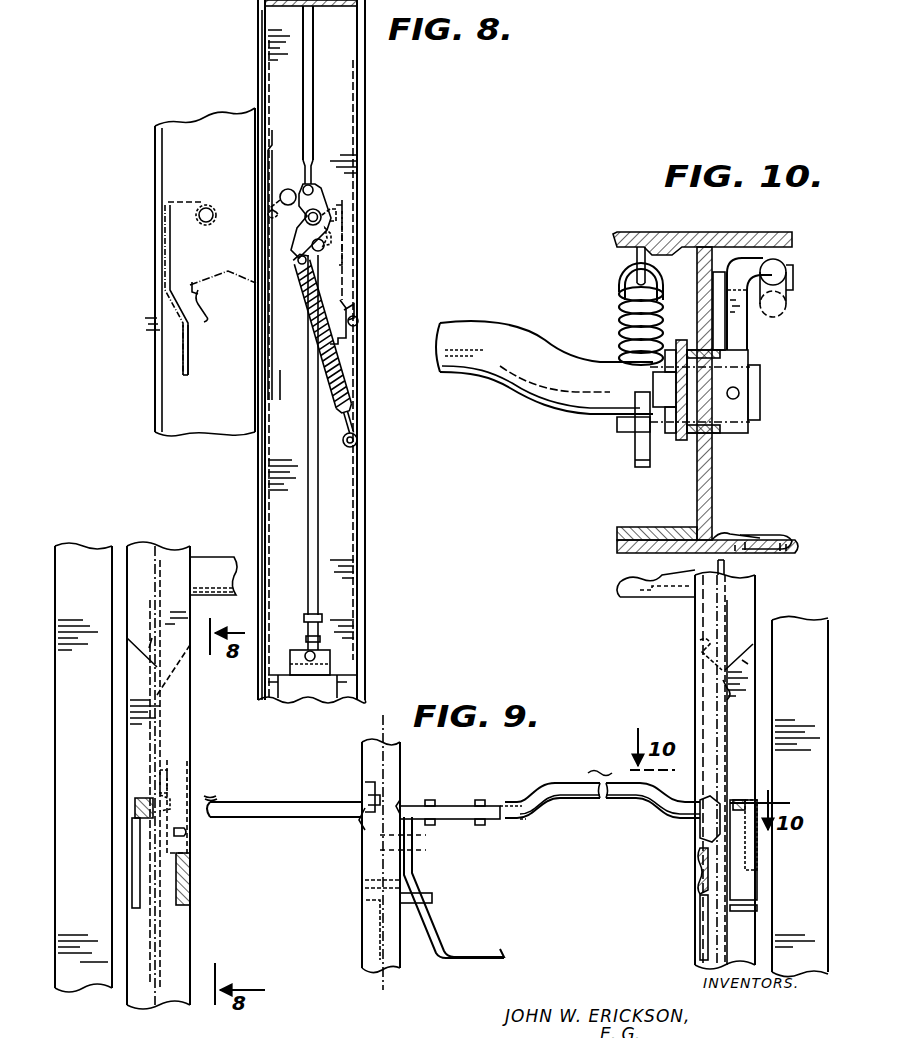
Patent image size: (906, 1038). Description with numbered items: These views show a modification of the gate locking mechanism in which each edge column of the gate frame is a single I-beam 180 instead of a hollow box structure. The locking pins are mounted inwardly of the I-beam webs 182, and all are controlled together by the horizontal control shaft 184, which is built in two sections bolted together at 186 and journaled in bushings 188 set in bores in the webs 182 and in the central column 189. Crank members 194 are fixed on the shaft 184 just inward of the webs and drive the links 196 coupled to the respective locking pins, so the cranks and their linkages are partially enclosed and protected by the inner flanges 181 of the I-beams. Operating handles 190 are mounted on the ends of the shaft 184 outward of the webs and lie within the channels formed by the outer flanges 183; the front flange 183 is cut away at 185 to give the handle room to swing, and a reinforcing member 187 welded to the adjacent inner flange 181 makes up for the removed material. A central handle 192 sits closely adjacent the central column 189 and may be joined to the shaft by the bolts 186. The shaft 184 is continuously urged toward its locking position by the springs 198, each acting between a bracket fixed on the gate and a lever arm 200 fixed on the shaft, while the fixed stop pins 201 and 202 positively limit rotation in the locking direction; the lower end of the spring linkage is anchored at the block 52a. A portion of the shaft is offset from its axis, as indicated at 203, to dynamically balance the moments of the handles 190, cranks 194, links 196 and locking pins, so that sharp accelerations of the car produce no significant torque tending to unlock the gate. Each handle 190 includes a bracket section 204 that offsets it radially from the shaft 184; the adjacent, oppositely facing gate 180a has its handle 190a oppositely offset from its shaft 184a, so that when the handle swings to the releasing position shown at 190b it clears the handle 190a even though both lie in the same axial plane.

In FIG. 8, the rod end block 52a is at (330, 668).
In FIG. 8, the I-beam 180 is at (367, 197).
In FIG. 9, the I-beam 180 is at (191, 718).
In FIG. 10, the I-beam 180 is at (734, 232).
In FIG. 8, the oppositely facing gate 180a is at (156, 196).
In FIG. 8, the inner flange 181 is at (262, 494).
In FIG. 9, the inner flange 181 is at (188, 665).
In FIG. 10, the inner flange 181 is at (614, 236).
In FIG. 8, the I-beam web 182 is at (350, 560).
In FIG. 9, the I-beam web 182 is at (176, 685).
In FIG. 10, the I-beam web 182 is at (712, 500).
In FIG. 9, the outer flange 183 is at (140, 1002).
In FIG. 10, the outer flange 183 is at (774, 241).
In FIG. 8, the horizontal control shaft 184 is at (274, 195).
In FIG. 9, the horizontal control shaft 184 is at (580, 775).
In FIG. 10, the horizontal control shaft 184 is at (520, 388).
In FIG. 8, the shaft of oppositely facing gate 184a is at (198, 224).
In FIG. 8, the cut-away 185 is at (262, 387).
In FIG. 9, the cut-away 185 is at (148, 672).
In FIG. 10, the cut-away 185 is at (712, 546).
In FIG. 9, the bolts 186 is at (484, 802).
In FIG. 8, the reinforcing member 187 is at (270, 370).
In FIG. 9, the reinforcing member 187 is at (690, 640).
In FIG. 10, the reinforcing member 187 is at (644, 526).
In FIG. 9, the bushings 188 is at (364, 780).
In FIG. 10, the bushings 188 is at (745, 345).
In FIG. 9, the central column 189 is at (400, 773).
In FIG. 8, the operating handle 190 is at (340, 262).
In FIG. 9, the operating handle 190 is at (132, 910).
In FIG. 10, the operating handle 190 is at (781, 304).
In FIG. 8, the handle of oppositely facing gate 190a is at (183, 340).
In FIG. 8, the operating handle in releasing position 190b is at (204, 306).
In FIG. 9, the central handle 192 is at (440, 935).
In FIG. 8, the crank member 194 is at (318, 200).
In FIG. 9, the crank member 194 is at (160, 828).
In FIG. 10, the crank member 194 is at (712, 452).
In FIG. 8, the link 196 is at (316, 145).
In FIG. 9, the link 196 is at (183, 753).
In FIG. 10, the link 196 is at (672, 432).
In FIG. 8, the spring 198 is at (340, 383).
In FIG. 9, the spring 198 is at (700, 864).
In FIG. 10, the spring 198 is at (641, 326).
In FIG. 8, the lever arm 200 is at (258, 282).
In FIG. 10, the lever arm 200 is at (622, 442).
In FIG. 8, the fixed stop pin 201 is at (356, 315).
In FIG. 9, the fixed stop pin 201 is at (757, 910).
In FIG. 9, the fixed stop pin 202 is at (432, 895).
In FIG. 8, the shaft offset 203 is at (287, 215).
In FIG. 9, the shaft offset 203 is at (540, 814).
In FIG. 10, the shaft offset 203 is at (566, 374).
In FIG. 8, the bracket section 204 is at (333, 235).
In FIG. 9, the bracket section 204 is at (744, 804).
In FIG. 10, the bracket section 204 is at (756, 340).